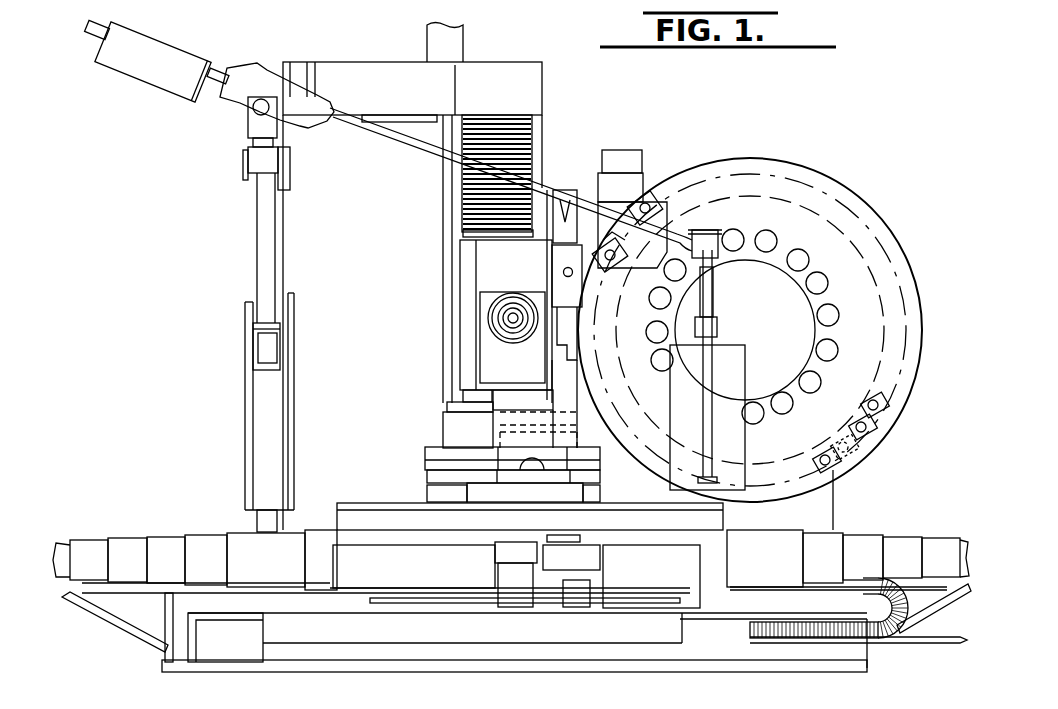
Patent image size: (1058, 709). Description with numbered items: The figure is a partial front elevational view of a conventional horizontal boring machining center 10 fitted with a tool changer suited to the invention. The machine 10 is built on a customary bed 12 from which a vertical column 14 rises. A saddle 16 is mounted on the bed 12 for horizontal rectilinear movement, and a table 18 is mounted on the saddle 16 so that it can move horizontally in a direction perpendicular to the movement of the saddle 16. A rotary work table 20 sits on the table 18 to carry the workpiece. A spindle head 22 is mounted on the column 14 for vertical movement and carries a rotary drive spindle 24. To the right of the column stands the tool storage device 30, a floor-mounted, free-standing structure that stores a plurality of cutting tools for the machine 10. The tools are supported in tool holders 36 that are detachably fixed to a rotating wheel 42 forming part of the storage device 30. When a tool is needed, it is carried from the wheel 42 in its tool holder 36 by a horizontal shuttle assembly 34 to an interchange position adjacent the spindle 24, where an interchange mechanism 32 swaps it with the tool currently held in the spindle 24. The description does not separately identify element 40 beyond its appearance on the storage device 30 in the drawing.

The machining center 10 is at (322, 376).
The bed 12 is at (285, 605).
The vertical column 14 is at (312, 255).
The saddle 16 is at (690, 537).
The table 18 is at (448, 498).
The rotary work table 20 is at (430, 456).
The spindle head 22 is at (490, 268).
The rotary drive spindle 24 is at (513, 318).
The tool storage device 30 is at (836, 165).
The interchange mechanism 32 is at (560, 250).
The horizontal shuttle assembly 34 is at (585, 182).
The tool holder 36 is at (608, 248).
The ring 40 is at (813, 505).
The rotating wheel 42 is at (825, 240).